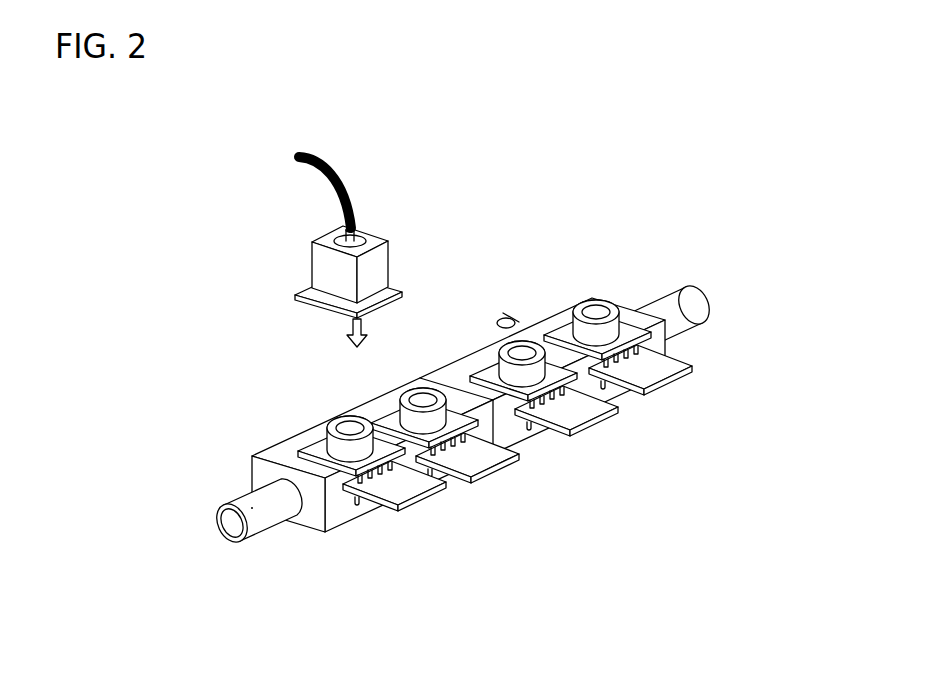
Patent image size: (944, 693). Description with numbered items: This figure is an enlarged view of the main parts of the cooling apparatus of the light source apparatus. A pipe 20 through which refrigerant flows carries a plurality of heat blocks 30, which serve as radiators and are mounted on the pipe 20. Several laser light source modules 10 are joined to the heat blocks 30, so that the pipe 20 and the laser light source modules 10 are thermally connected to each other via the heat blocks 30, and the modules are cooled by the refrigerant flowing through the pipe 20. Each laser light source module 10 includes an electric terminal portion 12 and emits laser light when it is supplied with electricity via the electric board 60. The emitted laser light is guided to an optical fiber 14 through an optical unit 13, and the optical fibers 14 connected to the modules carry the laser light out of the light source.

The laser light source module 10 is at (613, 309).
The electric terminal portion 12 is at (675, 335).
The optical unit 13 is at (387, 255).
The optical fiber 14 is at (353, 193).
The pipe 20 is at (231, 523).
The heat block 30 is at (252, 457).
The electric board 60 is at (690, 370).